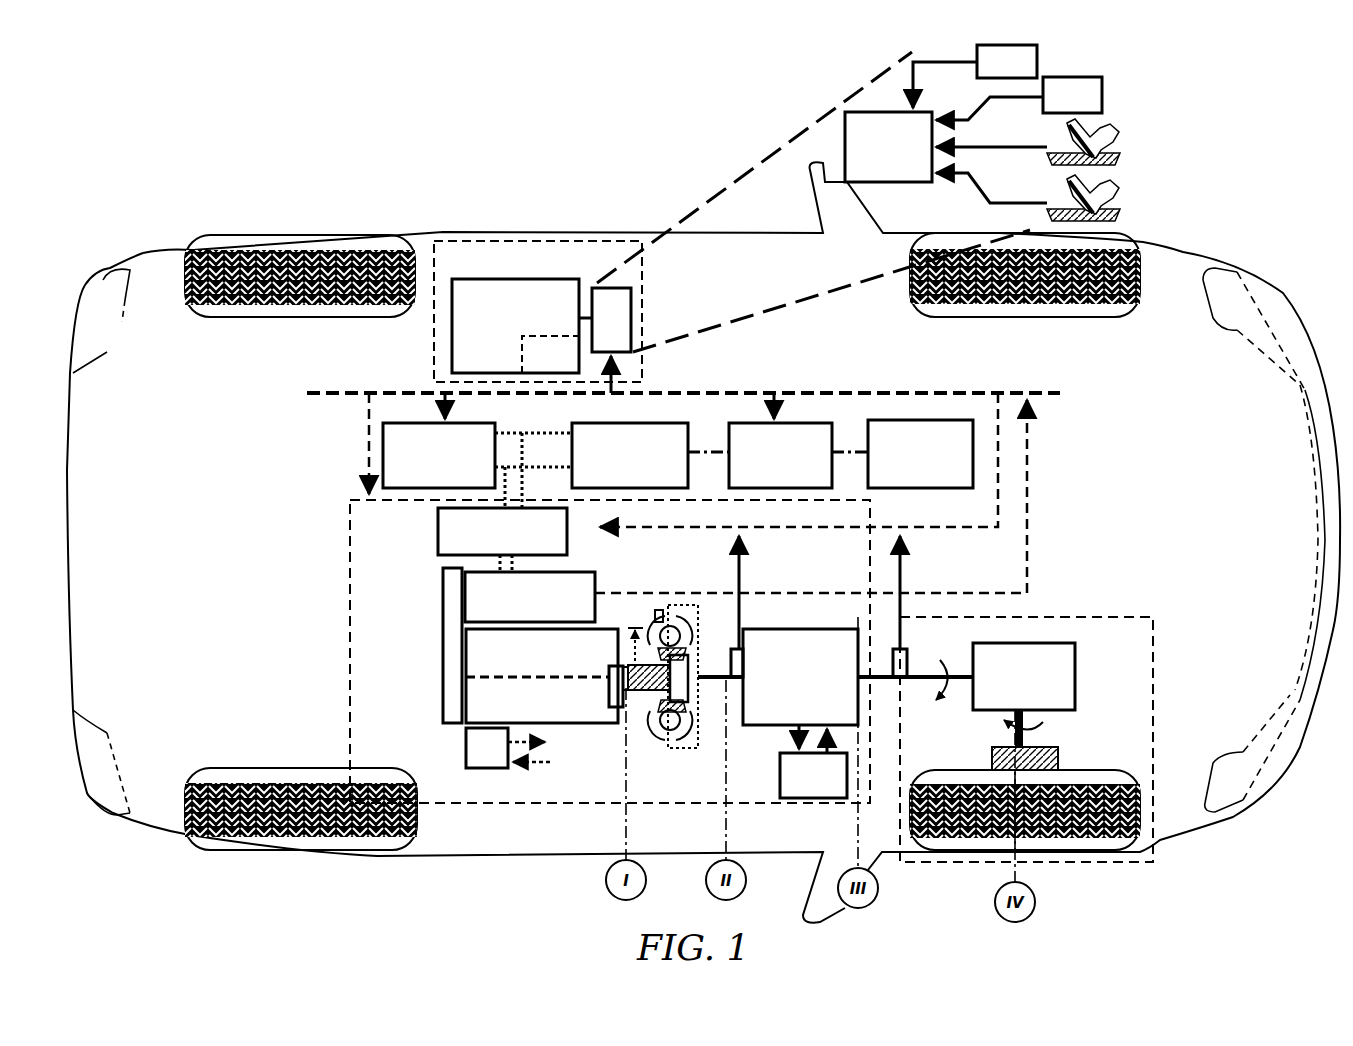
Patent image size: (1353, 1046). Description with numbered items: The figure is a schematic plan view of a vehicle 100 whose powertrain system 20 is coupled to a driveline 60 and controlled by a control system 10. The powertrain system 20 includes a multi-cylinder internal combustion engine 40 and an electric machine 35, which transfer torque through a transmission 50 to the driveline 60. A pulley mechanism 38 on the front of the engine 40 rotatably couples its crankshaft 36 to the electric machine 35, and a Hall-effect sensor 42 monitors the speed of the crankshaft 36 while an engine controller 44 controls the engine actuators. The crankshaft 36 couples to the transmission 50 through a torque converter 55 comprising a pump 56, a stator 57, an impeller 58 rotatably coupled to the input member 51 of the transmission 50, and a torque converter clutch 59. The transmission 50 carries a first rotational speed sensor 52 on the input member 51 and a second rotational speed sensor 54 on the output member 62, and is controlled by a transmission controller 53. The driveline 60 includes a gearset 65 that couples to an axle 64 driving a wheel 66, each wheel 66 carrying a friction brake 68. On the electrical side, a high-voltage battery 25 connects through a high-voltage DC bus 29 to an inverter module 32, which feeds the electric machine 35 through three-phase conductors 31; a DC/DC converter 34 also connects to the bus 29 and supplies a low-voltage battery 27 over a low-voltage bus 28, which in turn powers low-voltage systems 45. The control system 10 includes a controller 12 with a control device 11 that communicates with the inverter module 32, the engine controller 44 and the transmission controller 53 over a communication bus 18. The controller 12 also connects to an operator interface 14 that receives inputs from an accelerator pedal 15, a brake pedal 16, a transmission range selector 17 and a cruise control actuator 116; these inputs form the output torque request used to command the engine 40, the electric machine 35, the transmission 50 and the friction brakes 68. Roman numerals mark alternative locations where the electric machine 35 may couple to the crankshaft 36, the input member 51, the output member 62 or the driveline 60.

The vehicle 100 is at (1084, 366).
The control system 10 is at (440, 277).
The control device 11 is at (563, 371).
The controller 12 is at (502, 330).
The operator interface 14 is at (875, 160).
The accelerator pedal 15 is at (1070, 192).
The brake pedal 16 is at (1070, 140).
The transmission range selector 17 is at (1059, 107).
The cruise control actuator 116 is at (990, 74).
The communication bus 18 is at (405, 388).
The powertrain system 20 is at (875, 578).
The high-voltage energy storage device 25 is at (426, 468).
The low-voltage battery 27 is at (767, 468).
The low-voltage bus 28 is at (722, 448).
The high-voltage DC bus 29 is at (552, 467).
The three-phase conductors 31 is at (520, 565).
The inverter module 32 is at (489, 545).
The DC/DC electric power converter 34 is at (617, 468).
The electric machine 35 is at (517, 610).
The crankshaft 36 is at (480, 675).
The pulley mechanism 38 is at (443, 650).
The internal combustion engine 40 is at (529, 665).
The Hall-effect sensor 42 is at (617, 710).
The engine controller 44 is at (466, 758).
The low-voltage systems 45 is at (907, 467).
The transmission 50 is at (787, 695).
The input member 51 is at (711, 680).
The first rotational speed sensor 52 is at (738, 660).
The transmission controller 53 is at (800, 786).
The second rotational speed sensor 54 is at (915, 655).
The torque converter 55 is at (641, 733).
The pump 56 is at (693, 740).
The stator 57 is at (680, 725).
The impeller 58 is at (652, 735).
The torque converter clutch 59 is at (655, 615).
The driveline 60 is at (1058, 612).
The output member 62 is at (887, 665).
The axle 64 is at (1034, 736).
The gearset 65 is at (1011, 690).
The wheel 66 is at (983, 765).
The friction brake 68 is at (1058, 758).